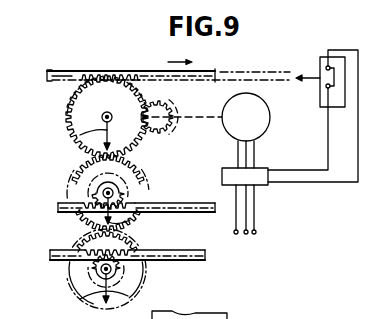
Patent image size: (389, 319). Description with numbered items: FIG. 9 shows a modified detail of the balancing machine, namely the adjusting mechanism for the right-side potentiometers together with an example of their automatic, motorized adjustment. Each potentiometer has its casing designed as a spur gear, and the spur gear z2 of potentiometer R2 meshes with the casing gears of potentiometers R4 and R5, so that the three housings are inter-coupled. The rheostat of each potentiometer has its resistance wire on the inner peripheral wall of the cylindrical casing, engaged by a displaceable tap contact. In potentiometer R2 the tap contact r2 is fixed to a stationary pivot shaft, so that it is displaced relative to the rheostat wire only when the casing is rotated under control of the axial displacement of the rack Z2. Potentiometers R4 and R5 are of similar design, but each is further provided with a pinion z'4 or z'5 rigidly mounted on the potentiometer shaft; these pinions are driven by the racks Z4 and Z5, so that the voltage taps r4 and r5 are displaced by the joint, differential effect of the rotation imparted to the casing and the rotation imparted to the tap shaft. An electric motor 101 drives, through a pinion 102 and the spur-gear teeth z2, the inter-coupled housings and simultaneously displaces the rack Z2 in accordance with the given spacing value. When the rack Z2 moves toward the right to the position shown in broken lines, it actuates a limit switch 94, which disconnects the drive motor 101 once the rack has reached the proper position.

The rack Z2 is at (146, 70).
The spur gear z2 is at (133, 143).
The potentiometer R2 is at (82, 108).
The tap contact r2 is at (80, 135).
The pinion 102 is at (173, 112).
The electric motor 101 is at (269, 127).
The limit switch 94 is at (328, 55).
The potentiometer R4 is at (80, 173).
The pinion z'4 is at (129, 191).
The voltage tap r4 is at (130, 220).
The rack Z4 is at (57, 206).
The rack Z5 is at (50, 248).
The potentiometer R5 is at (80, 275).
The pinion z'5 is at (129, 275).
The voltage tap r5 is at (93, 300).